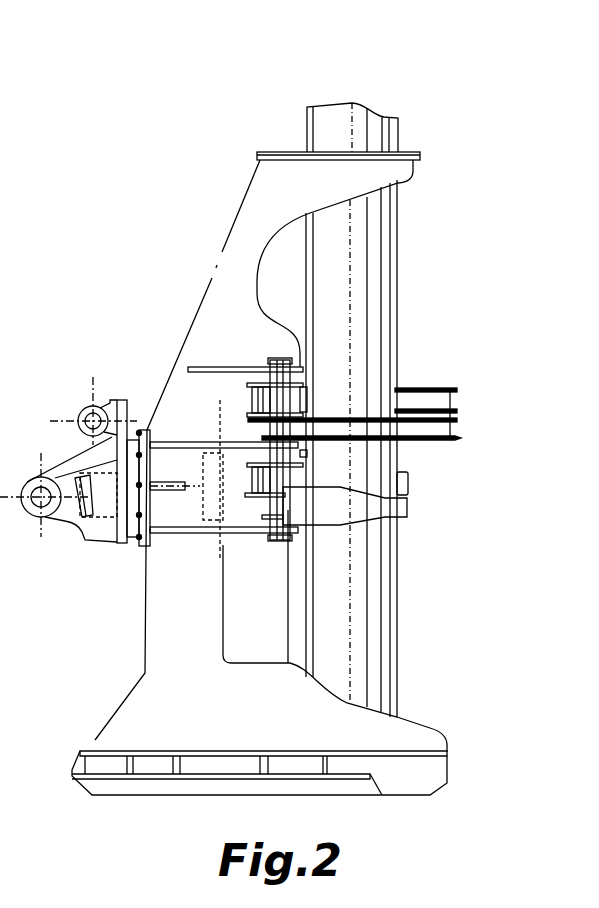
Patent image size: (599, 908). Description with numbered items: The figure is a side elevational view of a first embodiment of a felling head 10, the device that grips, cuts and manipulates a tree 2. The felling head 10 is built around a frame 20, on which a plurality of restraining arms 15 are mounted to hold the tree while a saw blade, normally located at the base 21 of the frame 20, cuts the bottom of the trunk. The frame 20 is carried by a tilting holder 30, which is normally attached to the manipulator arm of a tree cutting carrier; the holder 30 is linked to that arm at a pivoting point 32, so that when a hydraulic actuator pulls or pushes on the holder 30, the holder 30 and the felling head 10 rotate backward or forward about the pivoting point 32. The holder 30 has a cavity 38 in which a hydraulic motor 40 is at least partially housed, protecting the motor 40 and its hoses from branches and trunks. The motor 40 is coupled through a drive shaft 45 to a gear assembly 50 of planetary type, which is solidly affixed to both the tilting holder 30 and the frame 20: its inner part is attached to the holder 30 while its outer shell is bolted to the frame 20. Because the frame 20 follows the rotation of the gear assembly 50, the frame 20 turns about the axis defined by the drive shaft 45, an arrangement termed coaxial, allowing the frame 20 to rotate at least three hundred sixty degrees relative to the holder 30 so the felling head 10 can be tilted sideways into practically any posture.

The tree 2 is at (338, 370).
The felling head 10 is at (265, 450).
The restraining arms 15 is at (413, 425).
The frame 20 is at (271, 456).
The base 21 is at (267, 802).
The tilting holder 30 is at (68, 458).
The pivoting point 32 is at (45, 514).
The cavity 38 is at (73, 553).
The hydraulic motor 40 is at (104, 515).
The drive shaft 45 is at (168, 492).
The gear assembly 50 is at (176, 435).